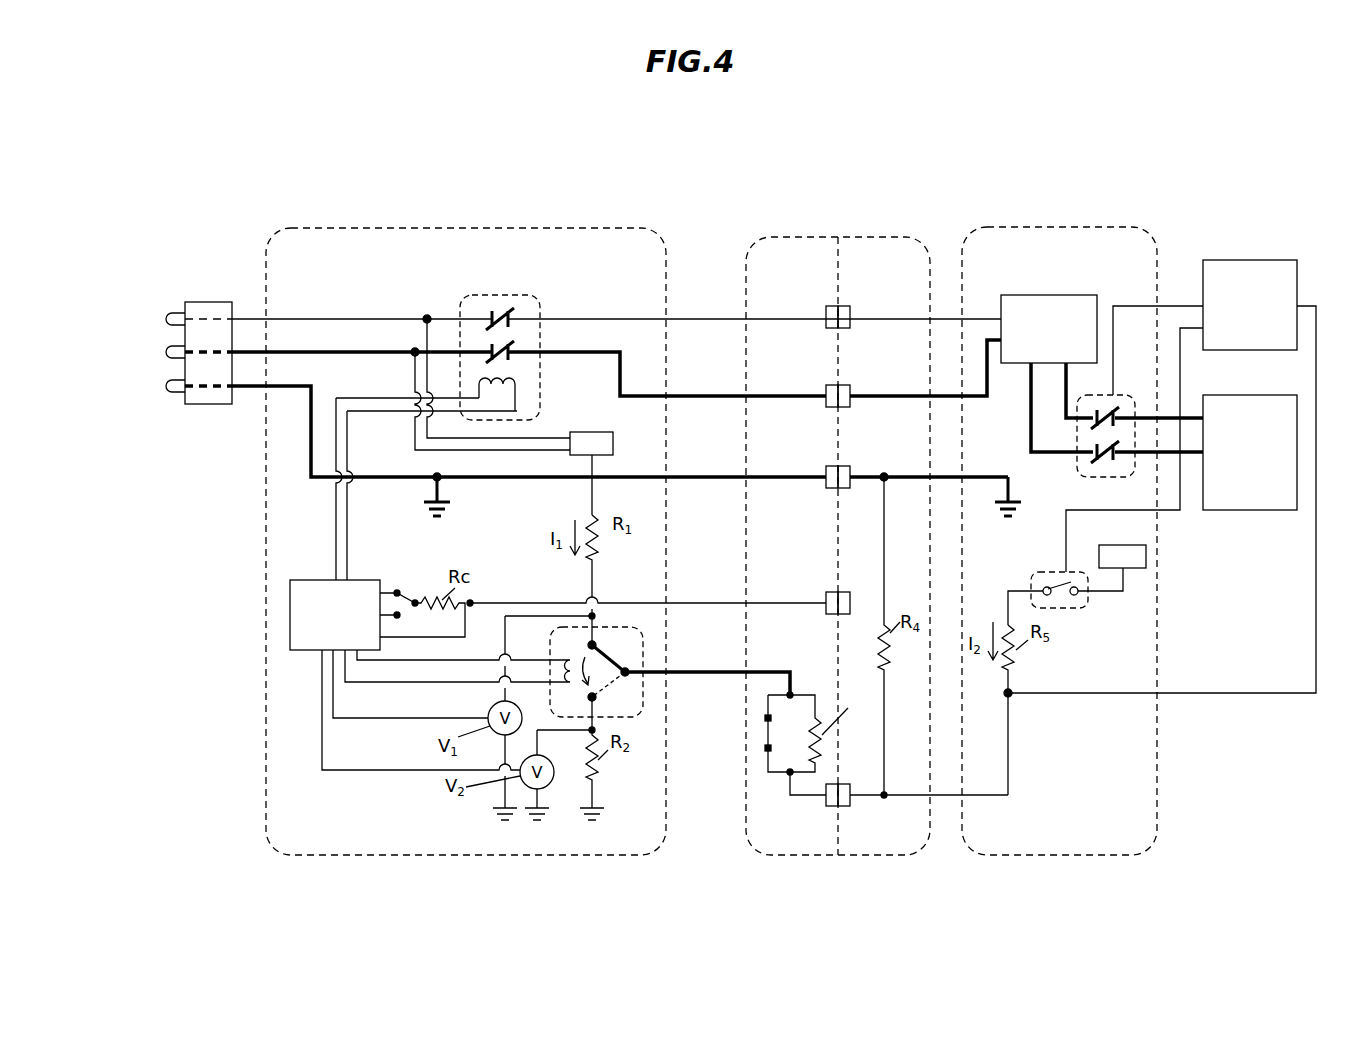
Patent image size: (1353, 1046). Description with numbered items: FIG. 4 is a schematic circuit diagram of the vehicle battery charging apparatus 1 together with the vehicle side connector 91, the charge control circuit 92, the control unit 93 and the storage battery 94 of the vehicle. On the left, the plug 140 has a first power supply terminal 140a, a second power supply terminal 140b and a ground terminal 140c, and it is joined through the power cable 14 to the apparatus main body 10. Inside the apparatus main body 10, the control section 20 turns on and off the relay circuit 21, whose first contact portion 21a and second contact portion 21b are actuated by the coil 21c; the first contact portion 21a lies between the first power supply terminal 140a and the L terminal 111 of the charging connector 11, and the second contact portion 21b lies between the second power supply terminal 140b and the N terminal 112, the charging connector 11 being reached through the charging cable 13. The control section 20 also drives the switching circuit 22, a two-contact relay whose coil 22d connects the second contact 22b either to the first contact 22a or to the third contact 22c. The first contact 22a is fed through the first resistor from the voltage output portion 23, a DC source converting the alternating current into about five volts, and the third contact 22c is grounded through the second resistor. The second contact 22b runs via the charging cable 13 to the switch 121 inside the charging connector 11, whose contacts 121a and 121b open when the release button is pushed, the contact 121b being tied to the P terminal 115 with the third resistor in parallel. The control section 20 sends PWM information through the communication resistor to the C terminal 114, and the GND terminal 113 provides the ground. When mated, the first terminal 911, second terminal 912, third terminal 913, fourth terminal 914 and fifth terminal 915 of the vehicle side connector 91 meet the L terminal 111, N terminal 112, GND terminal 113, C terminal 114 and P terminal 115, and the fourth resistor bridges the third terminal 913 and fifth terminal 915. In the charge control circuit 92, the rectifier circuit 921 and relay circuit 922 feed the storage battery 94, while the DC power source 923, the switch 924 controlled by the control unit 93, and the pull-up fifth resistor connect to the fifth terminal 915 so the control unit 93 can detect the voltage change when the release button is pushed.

The vehicle battery charging apparatus 1 is at (312, 184).
The apparatus main body 10 is at (590, 228).
The charging connector 11 is at (781, 237).
The charging cable 13 is at (702, 236).
The power cable 14 is at (243, 267).
The control section 20 is at (307, 580).
The relay circuit 21 is at (490, 295).
The first contact portion 21a is at (528, 306).
The second contact portion 21b is at (526, 344).
The coil 21c is at (519, 383).
The switching circuit 22 is at (610, 627).
The first contact 22a is at (600, 645).
The second contact 22b is at (632, 670).
The third contact 22c is at (600, 697).
The coil 22d is at (560, 664).
The voltage output portion 23 is at (613, 436).
The vehicle side connector 91 is at (877, 237).
The charge control circuit 92 is at (1115, 227).
The control unit 93 is at (1272, 260).
The storage battery 94 is at (1262, 395).
The L terminal 111 is at (826, 306).
The N terminal 112 is at (826, 385).
The GND terminal 113 is at (826, 466).
The C terminal 114 is at (826, 592).
The P terminal 115 is at (826, 806).
The switch 121 is at (756, 760).
The contact 121a is at (764, 717).
The contact 121b is at (768, 734).
The plug 140 is at (200, 302).
The first power supply terminal 140a is at (178, 314).
The second power supply terminal 140b is at (178, 347).
The ground terminal 140c is at (178, 380).
The first terminal 911 is at (848, 306).
The second terminal 912 is at (848, 385).
The third terminal 913 is at (848, 466).
The fourth terminal 914 is at (848, 592).
The fifth terminal 915 is at (848, 806).
The rectifier circuit 921 is at (1080, 295).
The relay circuit 922 is at (1077, 470).
The DC power source 923 is at (1110, 545).
The switch 924 is at (1052, 572).